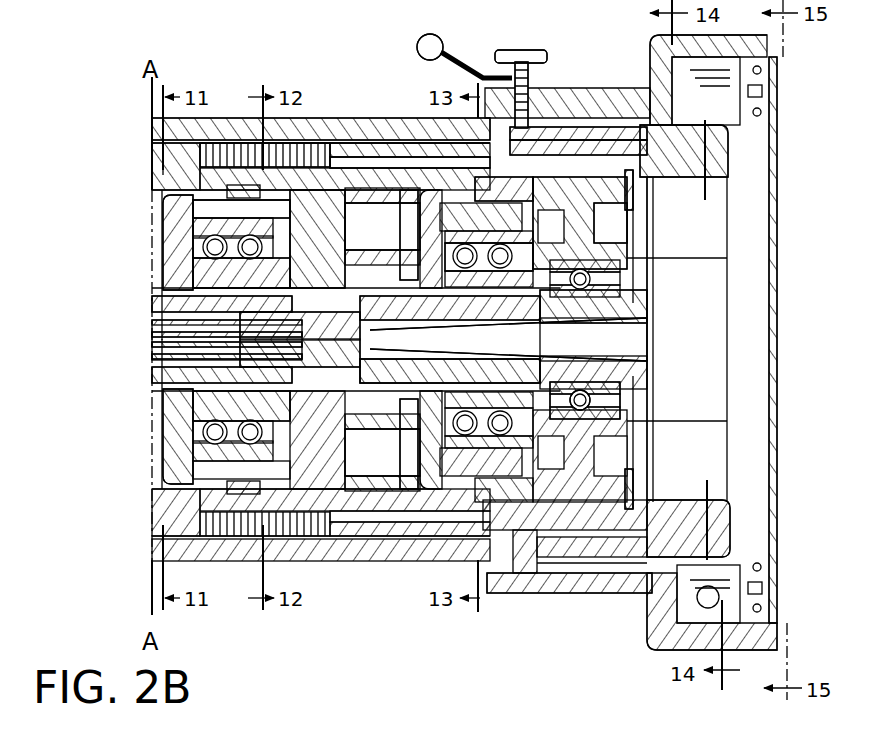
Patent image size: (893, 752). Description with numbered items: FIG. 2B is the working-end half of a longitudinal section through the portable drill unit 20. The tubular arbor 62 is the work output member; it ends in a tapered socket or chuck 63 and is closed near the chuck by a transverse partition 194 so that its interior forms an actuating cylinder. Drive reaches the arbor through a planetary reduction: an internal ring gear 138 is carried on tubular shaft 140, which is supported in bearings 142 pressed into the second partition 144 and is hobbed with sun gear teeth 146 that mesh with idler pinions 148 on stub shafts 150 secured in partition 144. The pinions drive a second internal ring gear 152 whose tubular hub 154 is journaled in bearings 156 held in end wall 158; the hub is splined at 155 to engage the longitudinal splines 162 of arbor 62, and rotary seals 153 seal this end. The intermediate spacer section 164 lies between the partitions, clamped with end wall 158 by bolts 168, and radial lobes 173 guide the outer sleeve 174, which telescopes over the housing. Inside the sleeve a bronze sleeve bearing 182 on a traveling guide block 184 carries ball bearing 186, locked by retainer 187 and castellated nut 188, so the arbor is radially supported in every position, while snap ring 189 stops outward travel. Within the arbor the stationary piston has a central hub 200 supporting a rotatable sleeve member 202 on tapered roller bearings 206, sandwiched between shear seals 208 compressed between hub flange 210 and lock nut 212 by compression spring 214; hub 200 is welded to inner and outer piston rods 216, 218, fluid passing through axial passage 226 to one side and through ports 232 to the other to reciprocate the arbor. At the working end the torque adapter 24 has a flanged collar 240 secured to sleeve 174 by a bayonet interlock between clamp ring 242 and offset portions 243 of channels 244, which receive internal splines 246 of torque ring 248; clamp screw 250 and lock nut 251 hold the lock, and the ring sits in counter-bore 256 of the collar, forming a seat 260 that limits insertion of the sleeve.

The drill unit 20 is at (406, 80).
The torque adapter assembly 24 is at (618, 88).
The tubular arbor 62 is at (160, 305).
The tapered socket or chuck 63 is at (648, 338).
The internal ring gear 138 is at (160, 200).
The tubular shaft 140 is at (160, 272).
The bearings 142 is at (210, 228).
The second partition 144 is at (298, 215).
The sun gear teeth 146 is at (390, 386).
The idler pinions 148 is at (350, 522).
The stub shaft 150 is at (343, 250).
The second internal ring gear 152 is at (372, 165).
The pressure type rotary seals 153 is at (425, 305).
The tubular hub 154 is at (530, 320).
The splines of hub interior 155 is at (500, 380).
The bearings 156 is at (465, 240).
The end wall 158 is at (358, 562).
The longitudinal splines 162 is at (162, 382).
The intermediate annular spacer section 164 is at (160, 170).
The second set of bolts 168 is at (380, 143).
The radially projecting lobes 173 is at (495, 180).
The outer sleeve 174 is at (355, 118).
The sleeve bearing 182 is at (630, 200).
The traveling annular guide block 184 is at (625, 225).
The ball bearing 186 is at (572, 382).
The retainer 187 is at (600, 406).
The castellated nut 188 is at (640, 292).
The snap ring 189 is at (640, 440).
The transverse partition 194 is at (410, 342).
The central hub 200 is at (240, 302).
The rotatable sleeve member 202 is at (360, 305).
The tapered roller bearings 206 is at (360, 422).
The high pressure shear seals 208 is at (260, 270).
The hub flange 210 is at (262, 410).
The lock nut 212 is at (405, 432).
The compression spring 214 is at (405, 245).
The inner tubular piston rod 216 is at (165, 346).
The outer tubular piston rod 218 is at (168, 358).
The axial passage 226 is at (262, 382).
The ports 232 is at (170, 337).
The flanged collar 240 is at (575, 593).
The internal clamp ring 242 is at (530, 112).
The circumferentially offset portions 243 is at (550, 158).
The channels 244 is at (645, 545).
The internal splines 246 is at (585, 135).
The torque ring 248 is at (777, 495).
The clamp screw 250 is at (537, 52).
The lock nut 251 is at (462, 62).
The counter-bore 256 is at (783, 157).
The seat 260 is at (684, 151).